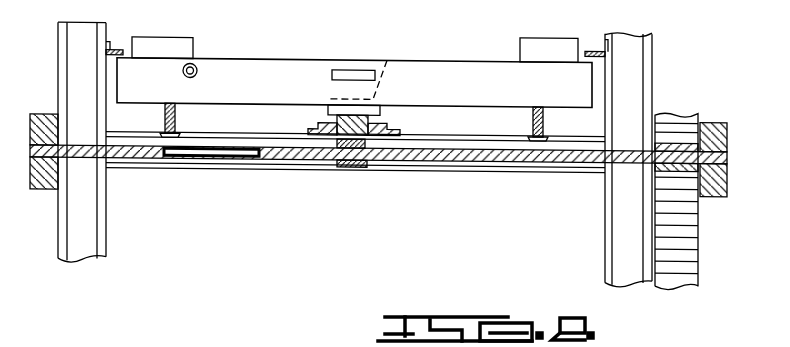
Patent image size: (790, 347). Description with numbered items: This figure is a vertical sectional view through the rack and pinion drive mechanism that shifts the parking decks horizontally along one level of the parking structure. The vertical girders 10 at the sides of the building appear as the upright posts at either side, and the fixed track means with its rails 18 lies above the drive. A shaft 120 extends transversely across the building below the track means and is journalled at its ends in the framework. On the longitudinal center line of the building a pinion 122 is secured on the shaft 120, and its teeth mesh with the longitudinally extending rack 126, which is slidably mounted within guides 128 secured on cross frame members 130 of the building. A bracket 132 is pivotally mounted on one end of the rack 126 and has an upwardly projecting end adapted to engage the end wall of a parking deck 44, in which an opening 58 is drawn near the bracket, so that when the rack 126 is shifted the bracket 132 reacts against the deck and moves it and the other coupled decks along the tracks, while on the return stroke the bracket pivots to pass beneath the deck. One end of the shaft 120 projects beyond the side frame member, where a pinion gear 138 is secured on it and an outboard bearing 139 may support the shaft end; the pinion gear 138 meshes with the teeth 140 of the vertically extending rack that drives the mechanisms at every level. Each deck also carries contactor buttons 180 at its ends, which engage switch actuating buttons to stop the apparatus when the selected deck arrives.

The vertical girder 10 is at (65, 94).
The rail 18 is at (177, 134).
The parking deck 44 is at (485, 70).
The slot 58 is at (355, 68).
The shaft 120 is at (492, 160).
The pinion 122 is at (345, 166).
The rack 126 is at (365, 113).
The guide 128 is at (310, 121).
The cross frame member 130 is at (263, 135).
The bracket 132 is at (390, 58).
The pinion gear 138 is at (700, 131).
The outboard bearing 139 is at (722, 124).
The teeth 140 is at (698, 226).
The contactor button 180 is at (197, 63).